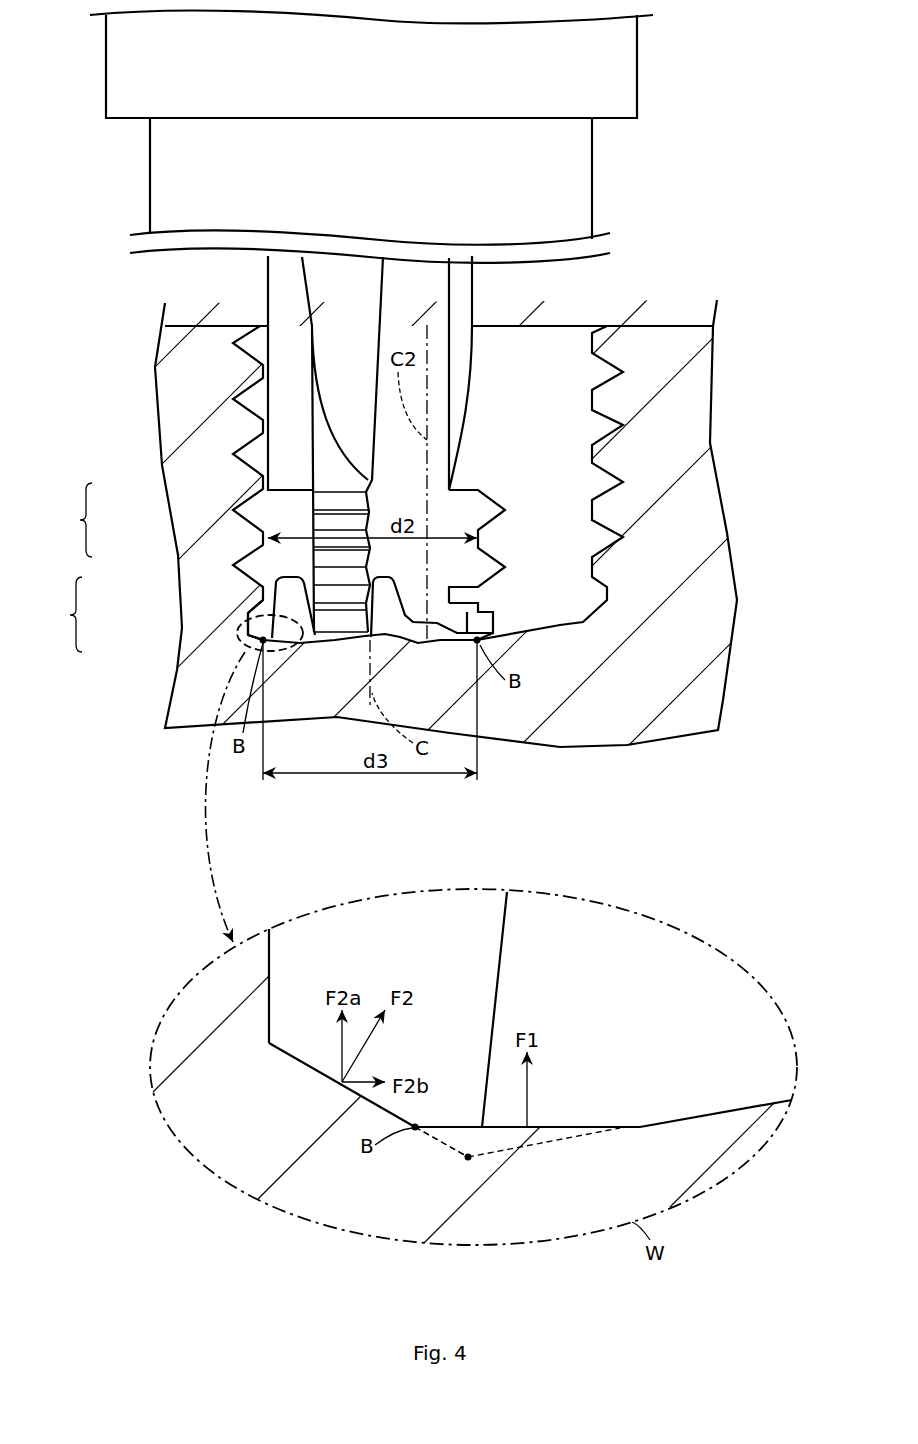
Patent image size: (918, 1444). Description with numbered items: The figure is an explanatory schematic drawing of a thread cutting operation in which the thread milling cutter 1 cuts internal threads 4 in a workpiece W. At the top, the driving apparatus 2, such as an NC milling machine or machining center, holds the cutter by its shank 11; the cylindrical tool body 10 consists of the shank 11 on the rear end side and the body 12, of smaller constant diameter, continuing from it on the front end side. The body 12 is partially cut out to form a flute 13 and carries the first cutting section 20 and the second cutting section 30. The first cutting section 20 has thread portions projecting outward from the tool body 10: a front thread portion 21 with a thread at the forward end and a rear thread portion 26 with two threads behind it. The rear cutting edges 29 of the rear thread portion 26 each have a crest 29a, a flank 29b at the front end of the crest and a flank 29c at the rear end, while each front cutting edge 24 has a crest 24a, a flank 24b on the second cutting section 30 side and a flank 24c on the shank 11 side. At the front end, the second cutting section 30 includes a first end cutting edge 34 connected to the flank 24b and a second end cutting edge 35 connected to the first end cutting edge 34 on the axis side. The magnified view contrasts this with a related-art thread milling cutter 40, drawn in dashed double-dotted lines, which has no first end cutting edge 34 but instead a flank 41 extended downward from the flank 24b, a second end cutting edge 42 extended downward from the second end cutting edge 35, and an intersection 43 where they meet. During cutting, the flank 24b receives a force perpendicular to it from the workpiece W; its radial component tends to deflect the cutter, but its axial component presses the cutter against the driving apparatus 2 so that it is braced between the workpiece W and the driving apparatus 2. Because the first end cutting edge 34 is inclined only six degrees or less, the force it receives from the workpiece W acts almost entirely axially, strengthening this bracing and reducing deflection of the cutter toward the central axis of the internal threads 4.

The thread milling cutter 1 is at (740, 95).
The driving apparatus 2 is at (609, 62).
The tool body 10 is at (640, 180).
The shank 11 is at (570, 185).
The body 12 is at (463, 282).
The flute 13 is at (290, 283).
The first cutting section 20 is at (493, 418).
The rear thread portion 26 is at (505, 495).
The internal threads 4 is at (593, 482).
The front thread portion 21 is at (505, 615).
The rear cutting edge 29 is at (72, 520).
The crest 29a is at (235, 505).
The flank 29b is at (240, 530).
The flank 29c is at (250, 497).
The front cutting edge 24 is at (195, 1100).
The crest 24a is at (240, 600).
The flank 24b is at (248, 625).
The flank 24c is at (236, 582).
The second cutting section 30 is at (418, 645).
The first end cutting edge 34 is at (270, 650).
The second end cutting edge 35 is at (307, 637).
The thread milling cutter 40 is at (483, 1162).
The flank 41 is at (415, 1132).
The second end cutting edge 42 is at (532, 1147).
The intersection 43 is at (470, 1160).
The workpiece W is at (660, 340).